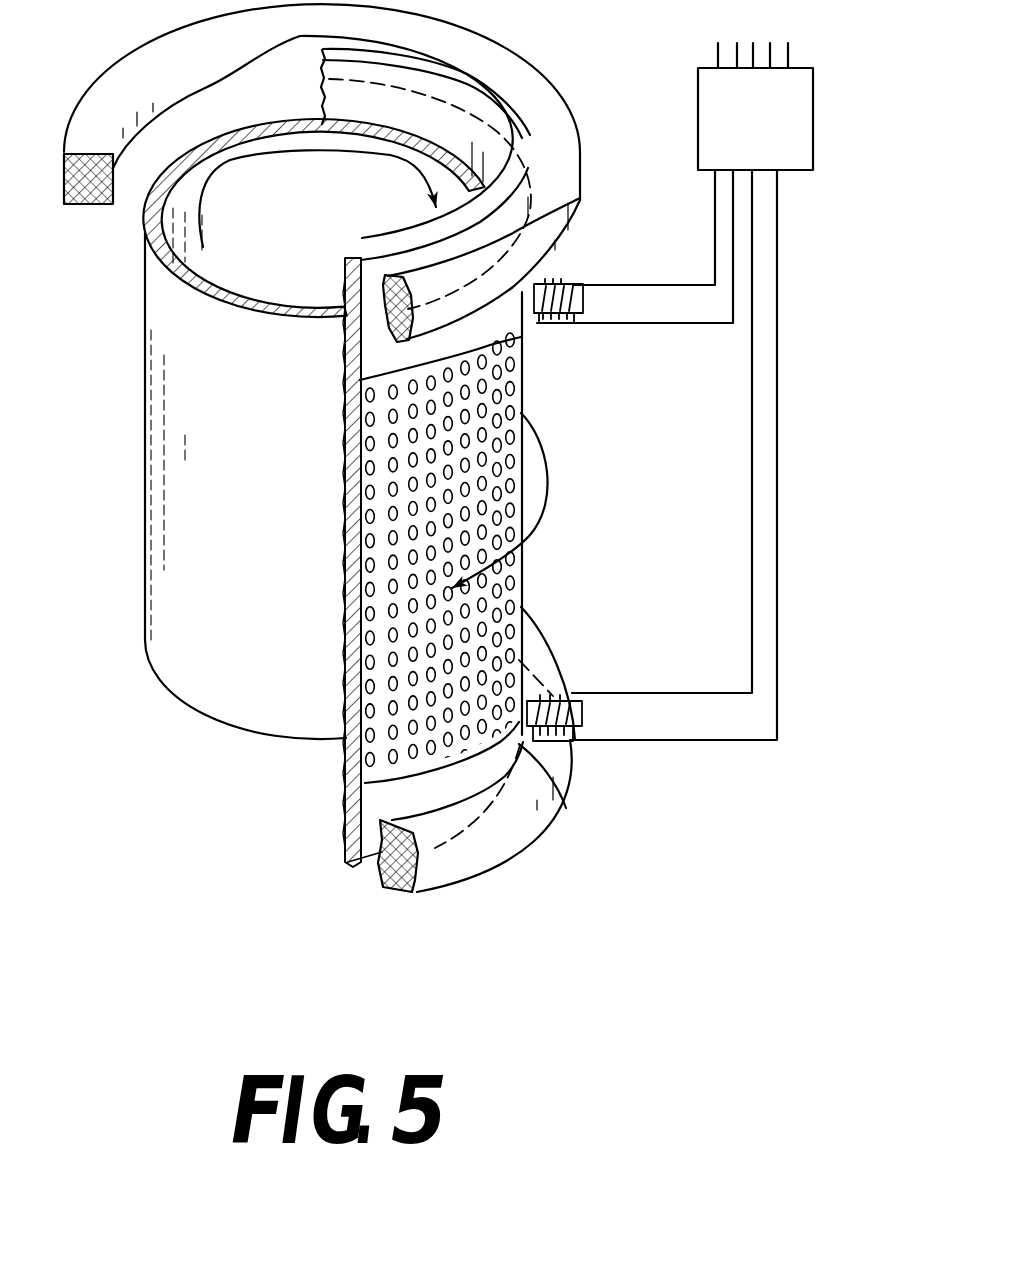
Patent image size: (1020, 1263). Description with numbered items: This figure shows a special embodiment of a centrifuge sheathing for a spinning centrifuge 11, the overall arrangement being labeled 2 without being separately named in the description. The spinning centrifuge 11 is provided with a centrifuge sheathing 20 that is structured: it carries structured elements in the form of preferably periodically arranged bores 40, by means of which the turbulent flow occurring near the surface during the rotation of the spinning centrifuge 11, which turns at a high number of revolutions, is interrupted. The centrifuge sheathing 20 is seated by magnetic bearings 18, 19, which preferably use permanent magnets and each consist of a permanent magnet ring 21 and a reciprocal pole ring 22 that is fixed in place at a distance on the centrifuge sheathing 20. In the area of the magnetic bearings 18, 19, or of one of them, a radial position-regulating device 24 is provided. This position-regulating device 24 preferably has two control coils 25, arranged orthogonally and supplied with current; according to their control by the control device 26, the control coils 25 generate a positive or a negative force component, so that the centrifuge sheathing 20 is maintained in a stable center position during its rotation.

The drum assembly 2 is at (188, 820).
The spinning centrifuge 11 is at (168, 553).
The magnetic bearing 18 is at (322, 348).
The magnetic bearing 19 is at (371, 884).
The centrifuge sheathing 20 is at (500, 480).
The permanent magnet ring 21 is at (560, 234).
The reciprocal pole ring 22 is at (373, 352).
The radial position-regulating device 24 is at (548, 337).
The control coil 25 is at (580, 288).
The control device 26 is at (790, 143).
The bores 40 is at (343, 620).